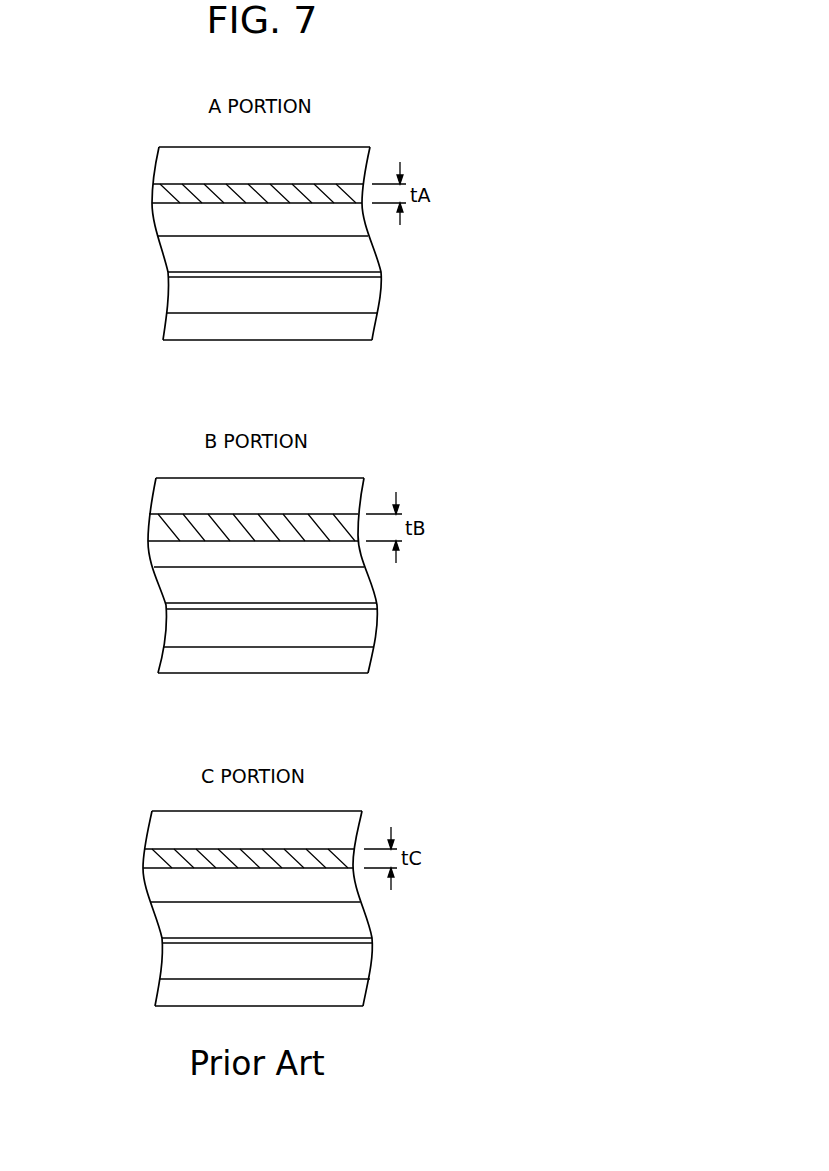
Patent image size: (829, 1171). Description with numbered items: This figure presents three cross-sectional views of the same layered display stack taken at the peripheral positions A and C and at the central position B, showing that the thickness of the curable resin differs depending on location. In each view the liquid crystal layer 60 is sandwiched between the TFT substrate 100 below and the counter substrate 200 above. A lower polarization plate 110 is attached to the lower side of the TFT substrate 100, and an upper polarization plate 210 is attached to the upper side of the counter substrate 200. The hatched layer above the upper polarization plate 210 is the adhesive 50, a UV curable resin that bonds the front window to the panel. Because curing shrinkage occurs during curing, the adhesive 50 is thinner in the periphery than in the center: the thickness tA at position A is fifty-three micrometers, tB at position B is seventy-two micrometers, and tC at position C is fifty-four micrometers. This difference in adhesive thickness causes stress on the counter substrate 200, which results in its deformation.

The counter substrate 200 is at (162, 164).
The adhesive 50 is at (160, 191).
The upper polarization plate 210 is at (162, 219).
The liquid crystal layer 60 is at (176, 269).
The TFT substrate 100 is at (180, 298).
The lower polarization plate 110 is at (178, 327).